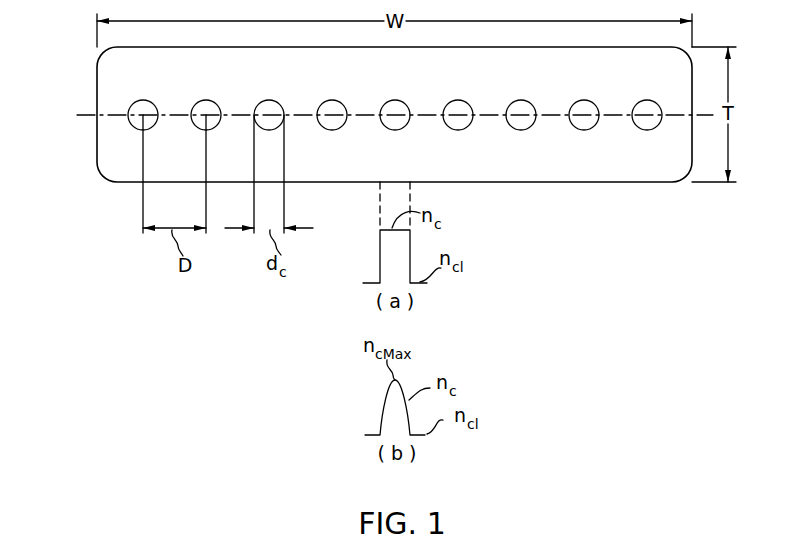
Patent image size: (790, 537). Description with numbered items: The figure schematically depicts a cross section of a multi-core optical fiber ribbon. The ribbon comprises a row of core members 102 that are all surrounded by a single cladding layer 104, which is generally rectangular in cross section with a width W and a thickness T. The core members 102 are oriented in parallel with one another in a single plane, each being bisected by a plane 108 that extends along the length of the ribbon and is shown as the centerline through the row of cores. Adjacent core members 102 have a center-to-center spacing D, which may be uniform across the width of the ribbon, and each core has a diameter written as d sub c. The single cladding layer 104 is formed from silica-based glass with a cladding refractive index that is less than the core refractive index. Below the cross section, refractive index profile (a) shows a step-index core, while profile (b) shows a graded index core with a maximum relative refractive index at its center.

The core members 102 is at (152, 105).
The single cladding layer 104 is at (110, 184).
The plane 108 is at (83, 115).